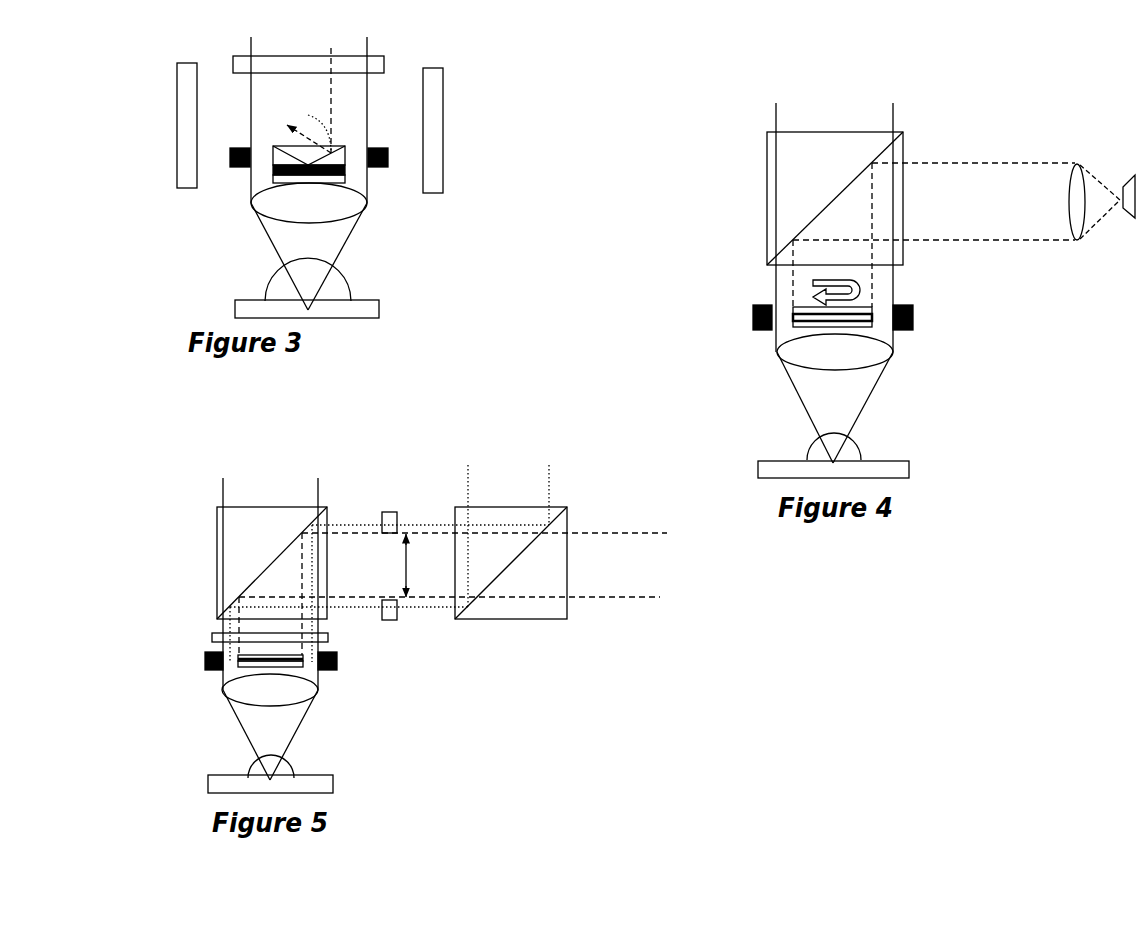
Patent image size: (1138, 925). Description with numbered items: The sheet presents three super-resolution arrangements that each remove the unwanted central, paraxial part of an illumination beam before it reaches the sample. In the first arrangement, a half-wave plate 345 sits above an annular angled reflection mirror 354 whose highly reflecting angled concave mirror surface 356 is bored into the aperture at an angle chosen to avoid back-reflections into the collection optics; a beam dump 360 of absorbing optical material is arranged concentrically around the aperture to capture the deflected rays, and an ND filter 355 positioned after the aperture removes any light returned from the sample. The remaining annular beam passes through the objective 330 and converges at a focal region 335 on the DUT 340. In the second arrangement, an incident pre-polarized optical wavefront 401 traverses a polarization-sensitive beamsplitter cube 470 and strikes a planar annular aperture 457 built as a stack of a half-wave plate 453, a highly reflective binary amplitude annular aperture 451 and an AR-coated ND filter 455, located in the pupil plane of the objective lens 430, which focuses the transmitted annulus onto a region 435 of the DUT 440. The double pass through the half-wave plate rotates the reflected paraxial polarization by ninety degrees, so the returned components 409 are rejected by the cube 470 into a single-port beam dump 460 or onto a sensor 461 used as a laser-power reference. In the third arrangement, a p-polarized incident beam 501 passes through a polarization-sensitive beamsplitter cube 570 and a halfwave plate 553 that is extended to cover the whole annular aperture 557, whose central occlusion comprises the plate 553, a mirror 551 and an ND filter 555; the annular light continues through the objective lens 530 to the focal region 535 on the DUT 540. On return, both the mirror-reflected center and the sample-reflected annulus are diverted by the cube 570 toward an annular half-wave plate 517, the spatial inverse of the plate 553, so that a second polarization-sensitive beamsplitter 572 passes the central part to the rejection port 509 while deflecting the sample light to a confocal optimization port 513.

In FIG. 3, the half-wave plate 345 is at (386, 63).
In FIG. 3, the beam dump 360 is at (193, 175).
In FIG. 3, the annular angled reflection mirror 354 is at (258, 172).
In FIG. 3, the angled concave mirror surface 356 is at (332, 150).
In FIG. 3, the ND filter 355 is at (346, 178).
In FIG. 3, the objective 330 is at (341, 218).
In FIG. 3, the focused beam region 335 is at (268, 296).
In FIG. 3, the DUT 340 is at (353, 318).
In FIG. 4, the incident pre-polarized optical wavefront 401 is at (837, 208).
In FIG. 4, the polarization-sensitive beamsplitter cube 470 is at (810, 202).
In FIG. 4, the back-reflected linearly polarized laser beam 409 is at (934, 201).
In FIG. 4, the single-port beam dump 460 is at (1066, 190).
In FIG. 4, the sensor 461 is at (1135, 178).
In FIG. 4, the half-wave plate 453 is at (795, 303).
In FIG. 4, the planar annular aperture 457 is at (982, 293).
In FIG. 4, the highly reflective binary amplitude annular aperture 451 is at (793, 320).
In FIG. 4, the AR coated ND filter 455 is at (858, 329).
In FIG. 4, the objective 430 is at (835, 398).
In FIG. 4, the focused beam region 435 is at (812, 455).
In FIG. 4, the DUT 440 is at (892, 470).
In FIG. 5, the incident beam 501 is at (265, 559).
In FIG. 5, the polarization-sensitive beamsplitter cube 570 is at (252, 548).
In FIG. 5, the halfwave plate 553 is at (211, 637).
In FIG. 5, the annular half-wave plate 517 is at (388, 511).
In FIG. 5, the confocal optimization port 513 is at (406, 513).
In FIG. 5, the second polarization-sensitive beamsplitter 572 is at (511, 563).
In FIG. 5, the rejection port 509 is at (493, 565).
In FIG. 5, the annular aperture 557 is at (435, 660).
In FIG. 5, the mirror 551 is at (236, 660).
In FIG. 5, the ND filter 555 is at (304, 668).
In FIG. 5, the objective 530 is at (270, 727).
In FIG. 5, the focused beam region 535 is at (256, 768).
In FIG. 5, the DUT 540 is at (327, 780).